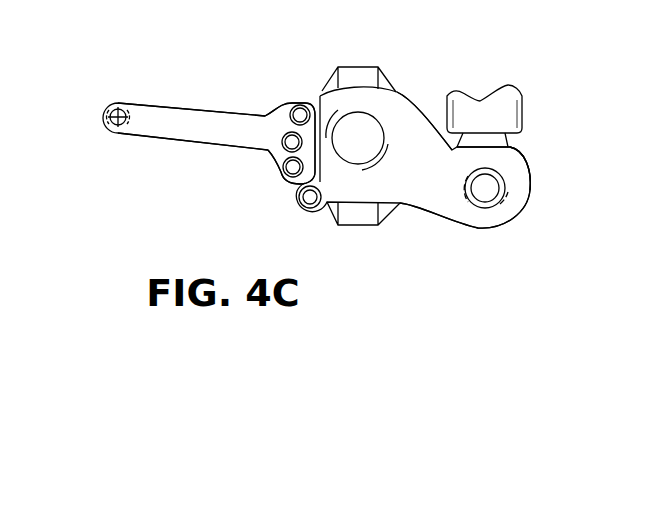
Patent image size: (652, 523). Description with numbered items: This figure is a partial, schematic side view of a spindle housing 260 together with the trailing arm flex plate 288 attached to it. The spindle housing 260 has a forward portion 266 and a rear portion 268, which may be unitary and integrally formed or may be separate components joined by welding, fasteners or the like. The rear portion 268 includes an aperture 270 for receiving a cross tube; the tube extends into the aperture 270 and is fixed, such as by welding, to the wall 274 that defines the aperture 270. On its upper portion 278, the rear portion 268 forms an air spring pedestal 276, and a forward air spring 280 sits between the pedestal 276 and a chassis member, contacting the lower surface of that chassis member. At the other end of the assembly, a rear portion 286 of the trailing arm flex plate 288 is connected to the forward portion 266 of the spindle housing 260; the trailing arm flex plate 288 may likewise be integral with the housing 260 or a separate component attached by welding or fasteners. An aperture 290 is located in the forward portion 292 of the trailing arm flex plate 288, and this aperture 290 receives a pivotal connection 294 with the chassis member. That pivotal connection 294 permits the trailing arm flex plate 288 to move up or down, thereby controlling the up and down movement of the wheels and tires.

The spindle housing 260 is at (362, 93).
The forward portion 266 is at (326, 226).
The rear portion 268 is at (487, 228).
The aperture 270 is at (485, 188).
The wall 274 is at (500, 180).
The air spring pedestal 276 is at (523, 157).
The upper portion 278 is at (441, 170).
The forward air spring 280 is at (481, 107).
The rear portion 286 is at (266, 110).
The trailing arm flex plate 288 is at (208, 124).
The aperture 290 is at (118, 136).
The forward portion 292 is at (144, 101).
The pivotal connection 294 is at (108, 112).